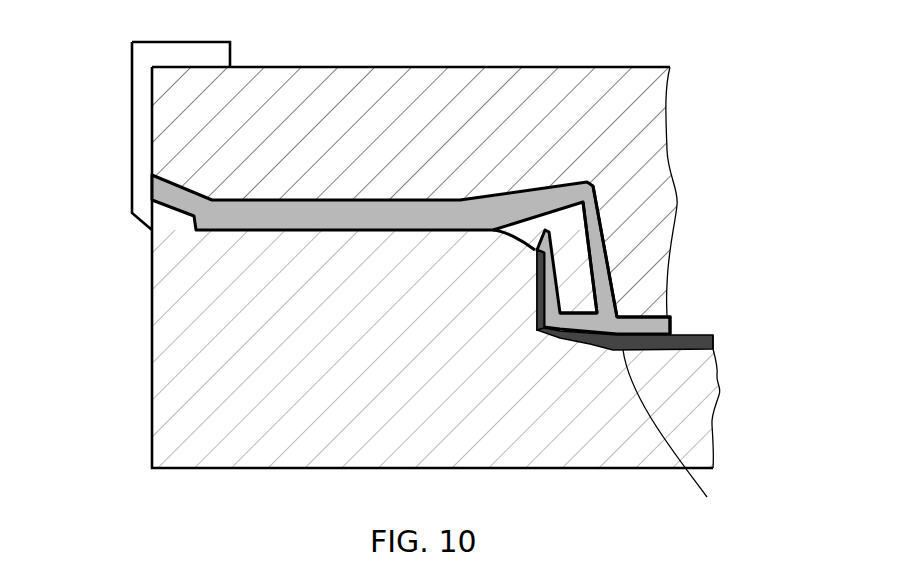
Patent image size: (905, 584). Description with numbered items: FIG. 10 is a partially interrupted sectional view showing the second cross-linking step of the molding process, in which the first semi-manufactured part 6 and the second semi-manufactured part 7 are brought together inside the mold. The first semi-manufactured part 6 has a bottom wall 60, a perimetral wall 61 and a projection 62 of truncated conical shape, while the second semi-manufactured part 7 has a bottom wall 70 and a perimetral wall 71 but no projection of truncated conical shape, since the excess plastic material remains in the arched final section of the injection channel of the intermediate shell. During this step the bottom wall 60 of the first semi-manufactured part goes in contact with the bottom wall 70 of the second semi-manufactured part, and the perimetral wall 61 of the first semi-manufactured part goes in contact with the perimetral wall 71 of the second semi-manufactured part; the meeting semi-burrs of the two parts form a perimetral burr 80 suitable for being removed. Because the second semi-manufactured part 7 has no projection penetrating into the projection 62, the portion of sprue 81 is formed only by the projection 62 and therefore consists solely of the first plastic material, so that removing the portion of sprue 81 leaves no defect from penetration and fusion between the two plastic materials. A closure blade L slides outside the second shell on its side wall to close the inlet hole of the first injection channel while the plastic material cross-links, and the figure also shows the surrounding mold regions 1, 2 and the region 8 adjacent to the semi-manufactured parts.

The first member (lower body) 1 is at (312, 425).
The second member (upper body) 2 is at (335, 92).
The first semi-manufactured part 6 is at (675, 315).
The second semi-manufactured part 7 is at (718, 342).
The gap 8 is at (732, 327).
The bottom wall 60 is at (648, 317).
The perimetral wall 61 is at (608, 222).
The projection 62 is at (610, 263).
The bottom wall 70 is at (676, 439).
The perimetral wall 71 is at (537, 300).
The perimetral burr 80 is at (525, 245).
The portion of sprue 81 is at (610, 240).
The closure blade L is at (143, 127).